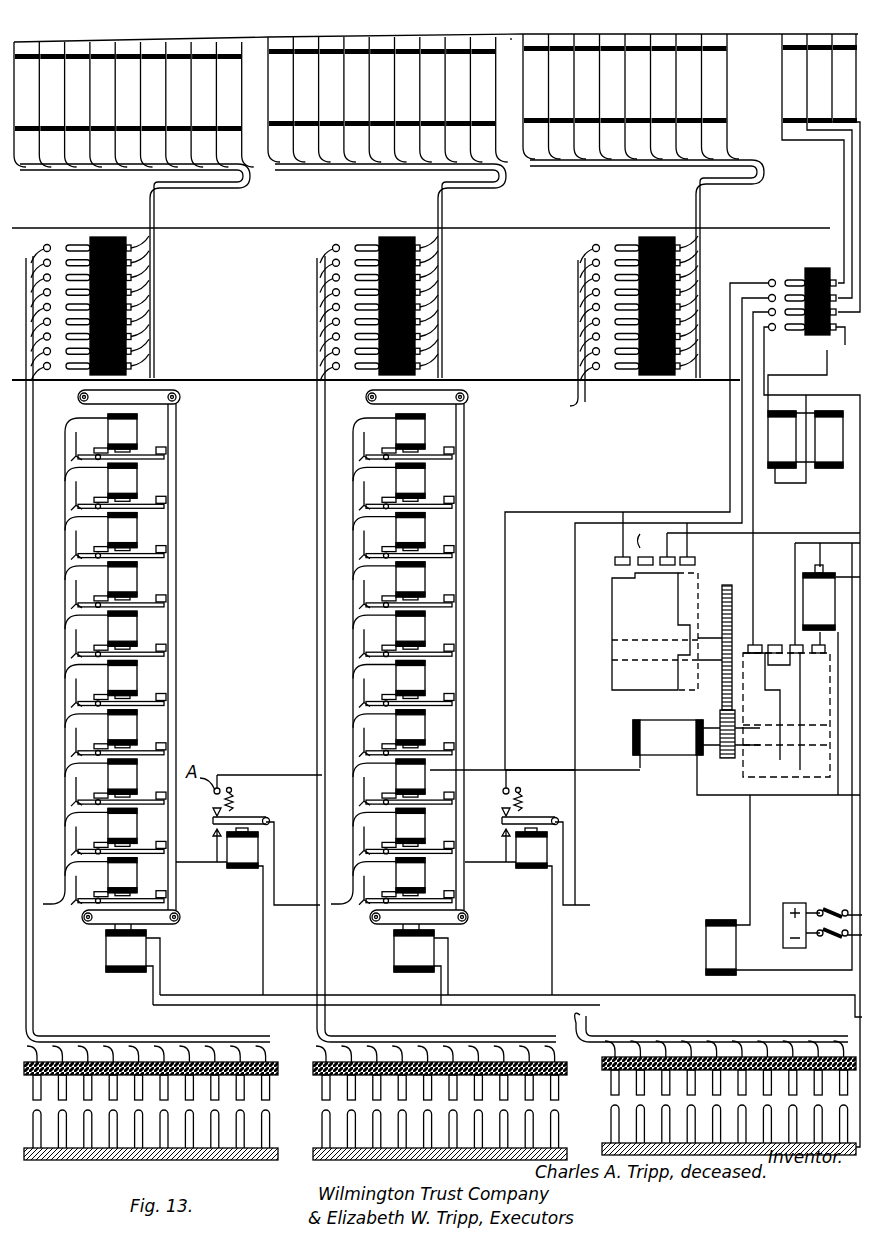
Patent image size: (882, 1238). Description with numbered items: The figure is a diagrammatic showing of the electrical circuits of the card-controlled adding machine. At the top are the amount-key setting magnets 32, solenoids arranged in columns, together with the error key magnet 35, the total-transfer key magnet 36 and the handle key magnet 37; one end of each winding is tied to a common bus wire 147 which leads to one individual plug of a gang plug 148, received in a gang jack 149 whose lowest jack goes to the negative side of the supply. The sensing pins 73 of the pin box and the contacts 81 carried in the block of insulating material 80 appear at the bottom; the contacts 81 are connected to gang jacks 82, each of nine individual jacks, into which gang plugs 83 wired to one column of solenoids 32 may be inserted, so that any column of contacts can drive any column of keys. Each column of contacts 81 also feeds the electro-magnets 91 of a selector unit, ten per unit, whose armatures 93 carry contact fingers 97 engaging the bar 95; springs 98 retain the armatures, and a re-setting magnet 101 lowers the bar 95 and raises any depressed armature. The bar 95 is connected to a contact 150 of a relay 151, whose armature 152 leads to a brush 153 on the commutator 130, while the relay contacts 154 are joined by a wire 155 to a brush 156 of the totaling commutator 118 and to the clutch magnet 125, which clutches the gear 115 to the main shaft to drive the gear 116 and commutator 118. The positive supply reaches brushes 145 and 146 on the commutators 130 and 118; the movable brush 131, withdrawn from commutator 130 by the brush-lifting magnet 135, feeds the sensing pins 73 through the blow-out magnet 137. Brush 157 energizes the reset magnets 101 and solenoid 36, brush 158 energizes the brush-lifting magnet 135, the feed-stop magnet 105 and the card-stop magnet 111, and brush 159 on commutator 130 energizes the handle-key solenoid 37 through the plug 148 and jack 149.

The amount-key setting magnets 32 is at (322, 88).
The error key magnet 35 is at (787, 102).
The total-transfer key magnet 36 is at (820, 105).
The handle key magnet 37 is at (845, 105).
The common bus wire 147 is at (511, 40).
The gang jacks 82 is at (48, 245).
The gang plugs 83 is at (72, 246).
The gang plug 148 is at (816, 272).
The gang jack 149 is at (770, 282).
The electro-magnets 91 is at (122, 432).
The armatures 93 is at (146, 556).
The bar 95 is at (176, 474).
The contact fingers 97 is at (166, 600).
The springs 98 is at (76, 600).
The re-setting magnet 101 is at (120, 951).
The feed-stop magnet 105 is at (778, 440).
The card-stop magnet 111 is at (830, 425).
The commutator 118 is at (632, 624).
The gear 116 is at (722, 598).
The brush 159 is at (734, 662).
The clutch magnet 125 is at (672, 748).
The gear 115 is at (728, 750).
The brush-lifting magnet 135 is at (818, 584).
The brush 153 is at (773, 640).
The brush 145 is at (795, 642).
The movable brush 131 is at (818, 655).
The commutator 130 is at (800, 760).
The blow-out magnet 137 is at (724, 950).
The brush 146 is at (644, 547).
The brush 156 is at (619, 561).
The brush 157 is at (698, 560).
The brush 158 is at (668, 560).
The wire 155 is at (488, 770).
The contact 150 is at (217, 838).
The relay 151 is at (246, 860).
The armature 152 is at (250, 820).
The relay contact 154 is at (215, 815).
The block of insulating material 80 is at (278, 1066).
The contacts 81 is at (270, 1090).
The sensing pins 73 is at (268, 1127).